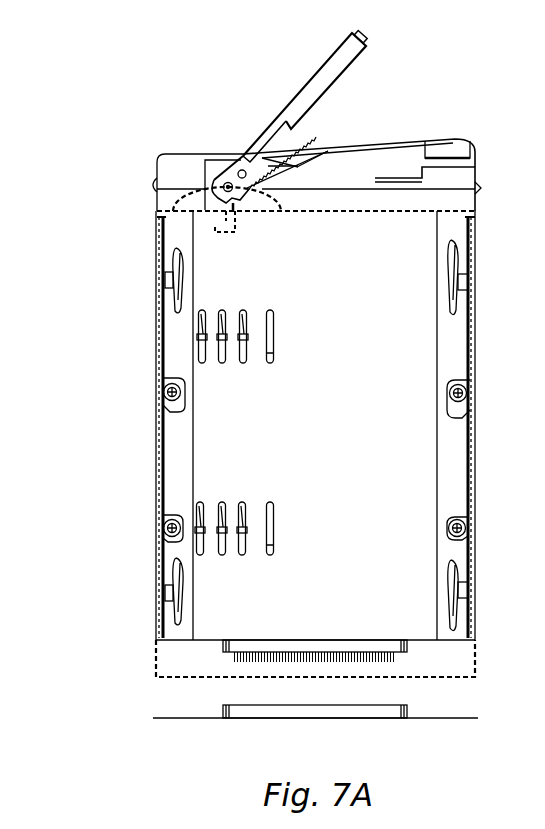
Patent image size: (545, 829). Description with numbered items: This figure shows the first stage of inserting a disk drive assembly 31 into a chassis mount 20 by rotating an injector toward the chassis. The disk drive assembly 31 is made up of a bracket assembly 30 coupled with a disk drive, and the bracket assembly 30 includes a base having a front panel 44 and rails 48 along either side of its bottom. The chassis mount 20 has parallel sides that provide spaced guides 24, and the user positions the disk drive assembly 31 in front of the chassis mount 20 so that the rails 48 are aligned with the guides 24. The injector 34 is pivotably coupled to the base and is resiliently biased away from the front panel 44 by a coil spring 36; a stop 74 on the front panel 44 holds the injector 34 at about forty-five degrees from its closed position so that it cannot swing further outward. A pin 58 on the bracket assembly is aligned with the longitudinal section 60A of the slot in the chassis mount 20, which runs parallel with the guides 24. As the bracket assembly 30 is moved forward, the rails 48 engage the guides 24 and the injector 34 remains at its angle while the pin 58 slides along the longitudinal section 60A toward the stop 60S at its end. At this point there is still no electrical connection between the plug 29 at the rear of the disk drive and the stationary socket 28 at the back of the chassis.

The disk drive assembly 31 is at (144, 140).
The front panel 44 is at (171, 170).
The pin 58 is at (224, 183).
The stop 74 is at (248, 158).
The injector 34 is at (343, 63).
The coil spring 36 is at (281, 148).
The longitudinal section 60A is at (236, 212).
The stop 60S is at (236, 243).
The rails 48 is at (181, 356).
The bracket assembly 30 is at (344, 589).
The guides 24 is at (155, 657).
The chassis mount 20 is at (171, 670).
The plug 29 is at (237, 648).
The socket 28 is at (391, 714).